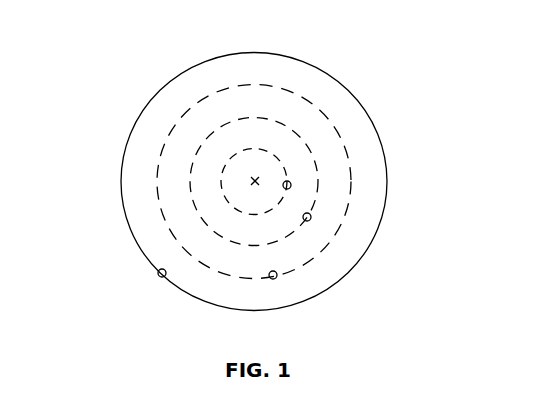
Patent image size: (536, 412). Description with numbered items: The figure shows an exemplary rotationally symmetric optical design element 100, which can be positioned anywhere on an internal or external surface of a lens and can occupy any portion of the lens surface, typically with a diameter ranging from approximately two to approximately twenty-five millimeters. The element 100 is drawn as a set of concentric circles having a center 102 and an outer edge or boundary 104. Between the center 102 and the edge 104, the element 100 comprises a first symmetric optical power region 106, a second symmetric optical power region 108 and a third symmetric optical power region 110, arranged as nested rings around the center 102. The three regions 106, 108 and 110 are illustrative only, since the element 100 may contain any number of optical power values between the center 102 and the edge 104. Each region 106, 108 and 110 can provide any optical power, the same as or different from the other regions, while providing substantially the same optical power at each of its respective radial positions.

The rotationally symmetric optical design element 100 is at (94, 74).
The center 102 is at (268, 168).
The edge or boundary 104 is at (159, 276).
The first symmetric optical power region 106 is at (291, 183).
The second symmetric optical power region 108 is at (310, 220).
The third symmetric optical power region 110 is at (277, 276).